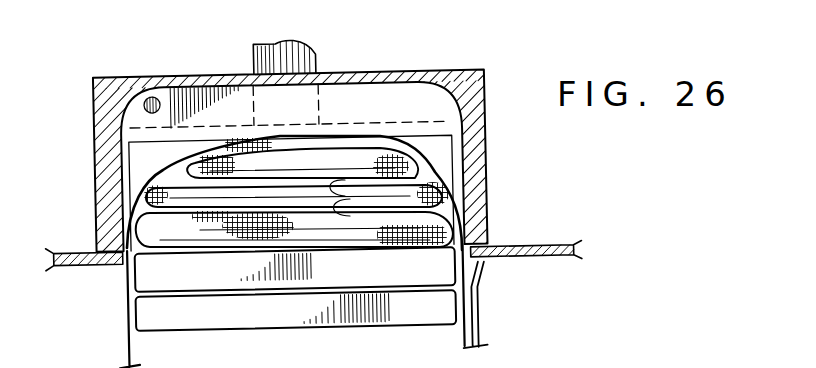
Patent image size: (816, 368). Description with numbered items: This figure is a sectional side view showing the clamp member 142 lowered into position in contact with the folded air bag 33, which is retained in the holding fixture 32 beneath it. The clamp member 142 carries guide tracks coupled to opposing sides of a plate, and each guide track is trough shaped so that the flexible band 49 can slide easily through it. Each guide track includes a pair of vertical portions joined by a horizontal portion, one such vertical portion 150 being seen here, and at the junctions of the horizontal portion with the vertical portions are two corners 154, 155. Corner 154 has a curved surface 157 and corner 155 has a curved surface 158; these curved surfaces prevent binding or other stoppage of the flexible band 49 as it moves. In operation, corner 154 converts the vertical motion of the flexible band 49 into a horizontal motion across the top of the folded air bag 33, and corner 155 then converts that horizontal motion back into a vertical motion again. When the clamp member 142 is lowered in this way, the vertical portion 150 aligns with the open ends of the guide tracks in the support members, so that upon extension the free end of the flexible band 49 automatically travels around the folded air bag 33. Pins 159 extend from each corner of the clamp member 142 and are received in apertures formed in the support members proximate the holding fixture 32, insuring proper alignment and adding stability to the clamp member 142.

The corner 155 is at (473, 70).
The corner 154 is at (104, 90).
The curved surface 158 is at (440, 103).
The clamp member 142 is at (418, 66).
The curved surface 157 is at (150, 97).
The vertical portion 150 is at (122, 183).
The air bag 33 is at (446, 192).
The flexible band 49 is at (445, 151).
The holding fixture 32 is at (361, 306).
The pin 159 is at (106, 262).